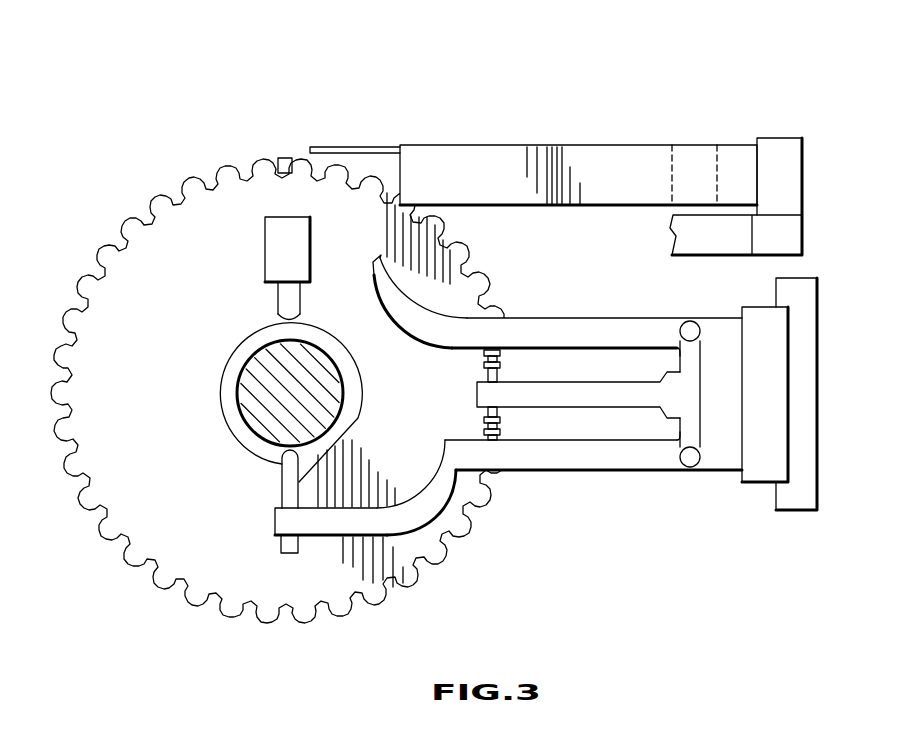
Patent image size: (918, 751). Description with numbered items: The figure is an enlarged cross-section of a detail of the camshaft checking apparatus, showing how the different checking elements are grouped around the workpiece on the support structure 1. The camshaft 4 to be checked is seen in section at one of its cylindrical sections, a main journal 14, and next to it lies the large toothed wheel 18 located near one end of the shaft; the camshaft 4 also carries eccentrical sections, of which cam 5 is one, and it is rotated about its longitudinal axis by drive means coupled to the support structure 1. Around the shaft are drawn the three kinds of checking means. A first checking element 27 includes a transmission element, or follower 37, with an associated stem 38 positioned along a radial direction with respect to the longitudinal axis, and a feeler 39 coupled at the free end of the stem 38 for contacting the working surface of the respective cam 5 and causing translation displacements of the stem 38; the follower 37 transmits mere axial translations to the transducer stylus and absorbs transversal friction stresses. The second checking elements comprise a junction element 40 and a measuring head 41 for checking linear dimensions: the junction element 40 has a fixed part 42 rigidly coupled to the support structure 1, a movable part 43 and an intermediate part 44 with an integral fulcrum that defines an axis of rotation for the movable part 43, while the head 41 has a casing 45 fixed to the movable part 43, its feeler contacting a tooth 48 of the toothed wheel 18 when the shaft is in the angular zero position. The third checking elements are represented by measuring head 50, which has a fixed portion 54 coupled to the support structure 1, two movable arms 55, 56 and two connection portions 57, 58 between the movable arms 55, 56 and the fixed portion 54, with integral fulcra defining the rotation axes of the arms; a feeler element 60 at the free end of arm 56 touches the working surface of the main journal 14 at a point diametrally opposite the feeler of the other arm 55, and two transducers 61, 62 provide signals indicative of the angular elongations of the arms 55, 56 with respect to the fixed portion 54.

The support structure 1 is at (800, 293).
The camshaft 4 is at (249, 423).
The cam 5 is at (262, 458).
The main journal 14 is at (250, 413).
The toothed wheel 18 is at (105, 395).
The first checking element 27 is at (187, 230).
The transmission element or follower 37 is at (284, 240).
The stem 38 is at (283, 296).
The feeler 39 is at (283, 319).
The junction element 40 is at (601, 151).
The measuring head 41 is at (367, 125).
The fixed part 42 is at (735, 163).
The movable part 43 is at (453, 160).
The intermediate part 44 is at (697, 160).
The casing 45 is at (300, 153).
The tooth 48 is at (300, 176).
The measuring head 50 is at (672, 477).
The fixed portion 54 is at (710, 405).
The movable arm 55 is at (615, 328).
The movable arm 56 is at (447, 477).
The connection portion 57 is at (701, 337).
The connection portion 58 is at (692, 470).
The feeler element 60 is at (286, 494).
The transducer 61 is at (503, 367).
The transducer 62 is at (505, 440).